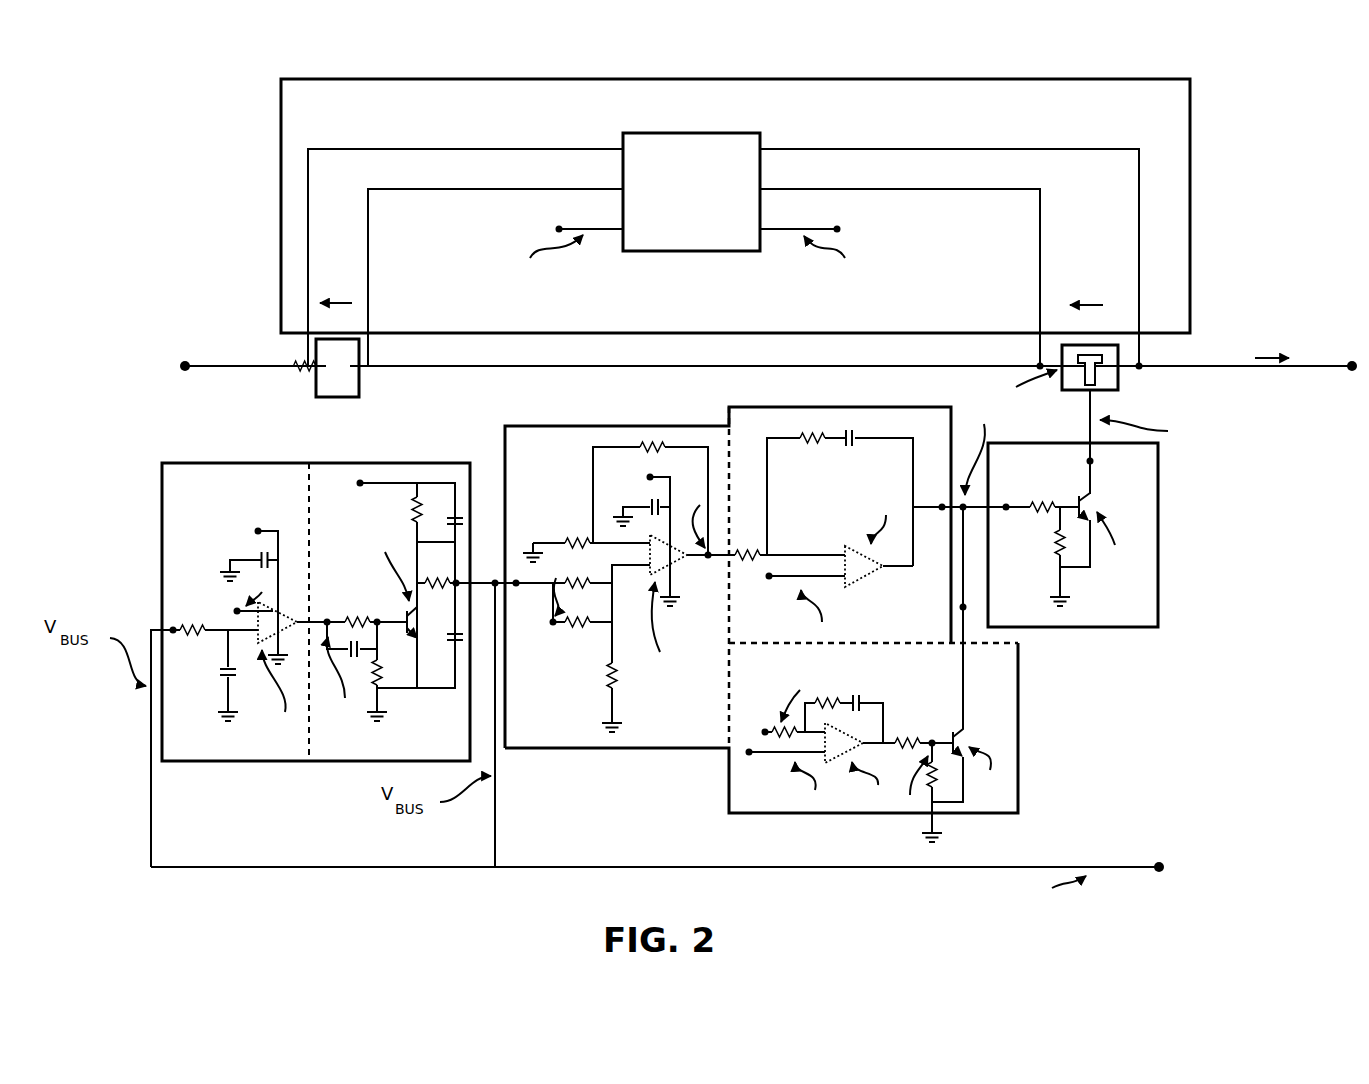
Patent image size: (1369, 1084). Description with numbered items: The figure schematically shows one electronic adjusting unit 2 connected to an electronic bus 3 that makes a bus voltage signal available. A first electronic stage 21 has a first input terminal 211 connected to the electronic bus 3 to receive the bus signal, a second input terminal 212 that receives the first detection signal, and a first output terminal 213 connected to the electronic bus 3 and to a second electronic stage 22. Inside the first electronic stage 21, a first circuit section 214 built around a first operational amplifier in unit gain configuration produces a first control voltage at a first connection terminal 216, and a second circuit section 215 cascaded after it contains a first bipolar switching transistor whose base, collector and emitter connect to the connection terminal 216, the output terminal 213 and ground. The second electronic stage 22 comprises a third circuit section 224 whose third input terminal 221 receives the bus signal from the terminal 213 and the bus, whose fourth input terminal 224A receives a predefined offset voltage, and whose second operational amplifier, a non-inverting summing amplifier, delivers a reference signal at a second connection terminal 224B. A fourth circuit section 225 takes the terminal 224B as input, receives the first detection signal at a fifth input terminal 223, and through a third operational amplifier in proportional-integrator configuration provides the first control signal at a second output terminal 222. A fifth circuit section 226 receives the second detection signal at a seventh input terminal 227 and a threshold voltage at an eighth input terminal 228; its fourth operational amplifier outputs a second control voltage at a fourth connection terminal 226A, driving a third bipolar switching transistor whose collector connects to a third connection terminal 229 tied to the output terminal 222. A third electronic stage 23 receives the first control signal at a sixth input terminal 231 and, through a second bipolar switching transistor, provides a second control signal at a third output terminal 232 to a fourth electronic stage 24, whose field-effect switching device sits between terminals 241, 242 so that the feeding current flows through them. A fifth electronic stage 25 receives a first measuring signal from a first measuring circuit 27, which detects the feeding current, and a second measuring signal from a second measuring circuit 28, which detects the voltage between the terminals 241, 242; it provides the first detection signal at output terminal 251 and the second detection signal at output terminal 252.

The electronic adjusting unit 2 is at (1307, 98).
The electronic bus 3 is at (1100, 858).
The first electronic stage 21 is at (300, 769).
The second electronic stage 22 is at (590, 760).
The third electronic stage 23 is at (1107, 634).
The fourth electronic stage 24 is at (1126, 378).
The fifth electronic stage 25 is at (1198, 205).
The first measuring circuit 27 is at (368, 380).
The second measuring circuit 28 is at (1034, 283).
The first input terminal 211 is at (183, 645).
The second input terminal 212 is at (233, 606).
The first output terminal 213 is at (457, 576).
The first circuit section 214 is at (196, 499).
The second circuit section 215 is at (457, 754).
The first connection terminal 216 is at (328, 612).
The third input terminal 221 is at (516, 576).
The second output terminal 222 is at (938, 501).
The fifth input terminal 223 is at (770, 590).
The third circuit section 224 is at (694, 737).
The fourth input terminal 224A is at (553, 641).
The second connection terminal 224B is at (706, 568).
The fourth circuit section 225 is at (931, 625).
The fifth circuit section 226 is at (1011, 684).
The fourth connection terminal 226A is at (935, 731).
The seventh input terminal 227 is at (750, 762).
The eighth input terminal 228 is at (763, 725).
The third connection terminal 229 is at (969, 602).
The sixth input terminal 231 is at (1009, 498).
The third output terminal 232 is at (1099, 461).
The terminal 241 is at (1034, 357).
The terminal 242 is at (1146, 356).
The output terminal 251 is at (553, 227).
The output terminal 252 is at (843, 226).